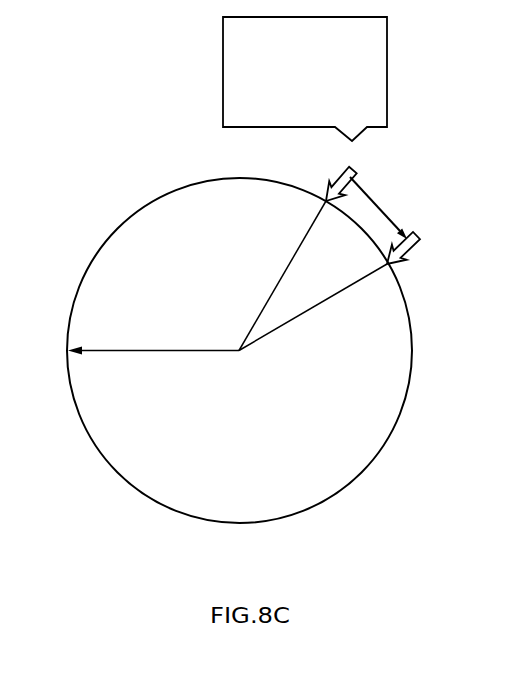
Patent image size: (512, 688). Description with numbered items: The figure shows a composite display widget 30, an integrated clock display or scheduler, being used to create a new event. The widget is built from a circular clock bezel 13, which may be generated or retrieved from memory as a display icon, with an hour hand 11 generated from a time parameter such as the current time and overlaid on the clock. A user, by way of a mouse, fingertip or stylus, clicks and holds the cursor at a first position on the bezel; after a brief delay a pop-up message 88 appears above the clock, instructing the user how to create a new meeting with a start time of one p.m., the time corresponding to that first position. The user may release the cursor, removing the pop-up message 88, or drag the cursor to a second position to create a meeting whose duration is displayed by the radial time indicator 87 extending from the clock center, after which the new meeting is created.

The composite display widget 30 is at (90, 200).
The clock bezel 13 is at (114, 471).
The hour hand 11 is at (164, 352).
The radial time indicator 87 is at (306, 296).
The pop-up message 88 is at (388, 70).